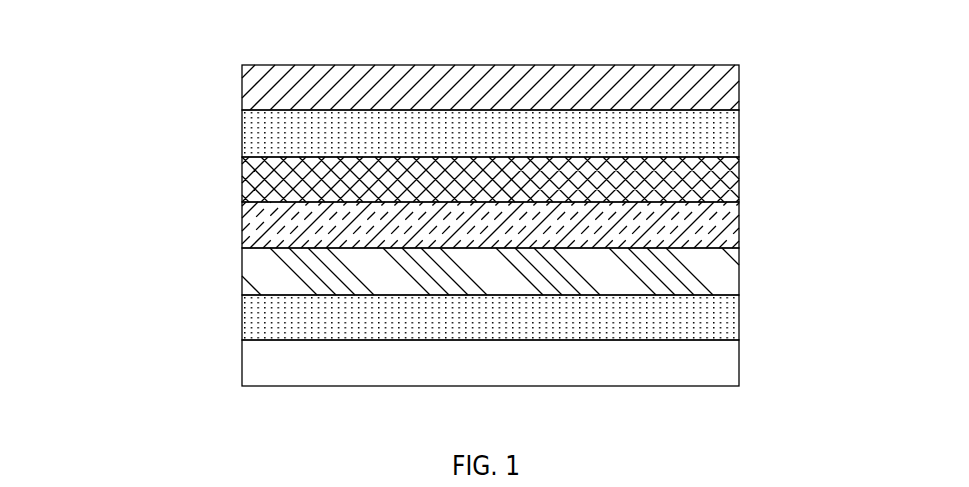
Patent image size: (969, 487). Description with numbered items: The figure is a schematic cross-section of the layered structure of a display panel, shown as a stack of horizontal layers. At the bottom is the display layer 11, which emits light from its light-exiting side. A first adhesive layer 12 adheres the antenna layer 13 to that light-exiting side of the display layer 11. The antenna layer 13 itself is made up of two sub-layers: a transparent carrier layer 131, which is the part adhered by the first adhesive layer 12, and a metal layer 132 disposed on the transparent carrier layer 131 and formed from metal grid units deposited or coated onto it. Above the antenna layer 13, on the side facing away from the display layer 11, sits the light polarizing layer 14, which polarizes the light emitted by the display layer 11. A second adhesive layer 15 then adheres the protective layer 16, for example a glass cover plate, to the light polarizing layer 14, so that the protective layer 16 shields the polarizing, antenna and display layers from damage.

The display layer 11 is at (242, 363).
The first adhesive layer 12 is at (242, 318).
The antenna layer 13 is at (461, 244).
The transparent carrier layer 131 is at (242, 272).
The metal layer 132 is at (242, 224).
The light polarizing layer 14 is at (242, 177).
The second adhesive layer 15 is at (242, 133).
The protective layer 16 is at (242, 88).